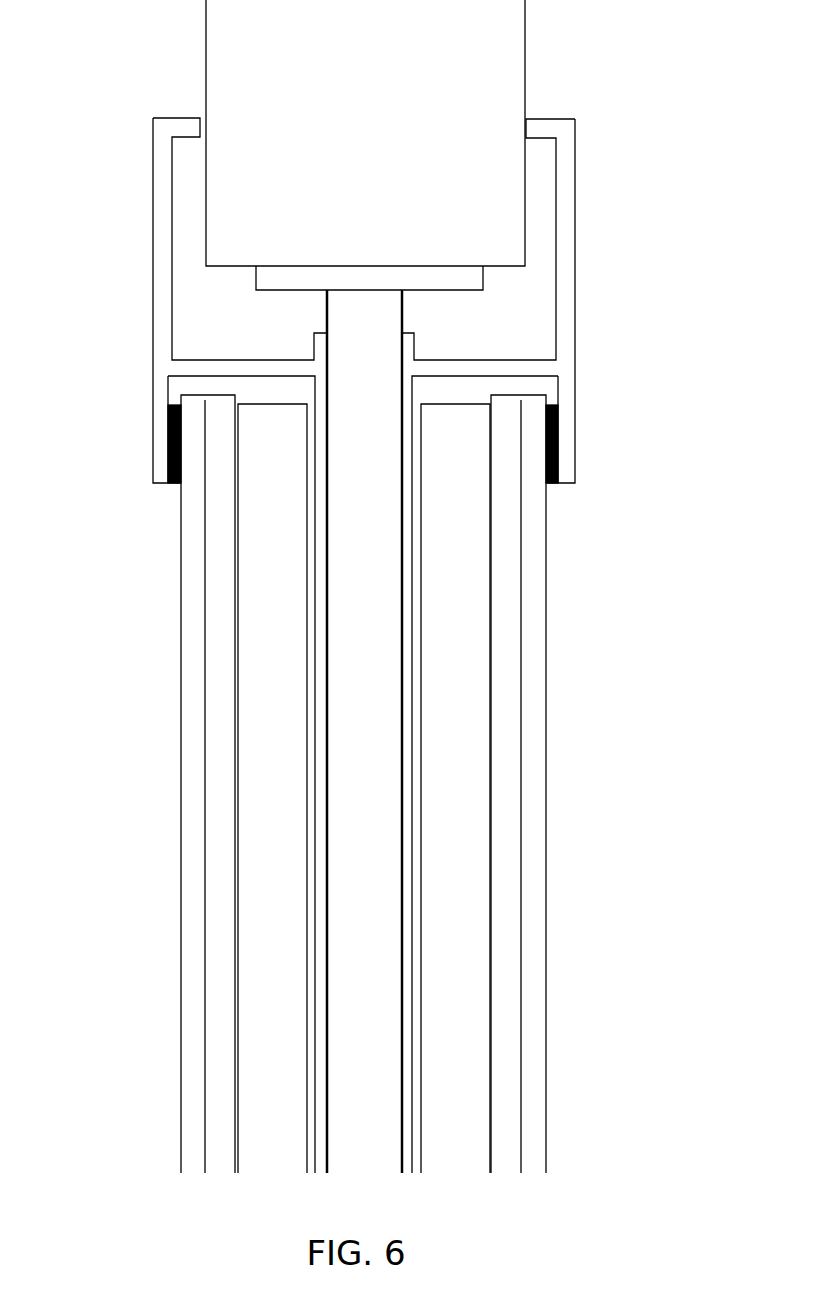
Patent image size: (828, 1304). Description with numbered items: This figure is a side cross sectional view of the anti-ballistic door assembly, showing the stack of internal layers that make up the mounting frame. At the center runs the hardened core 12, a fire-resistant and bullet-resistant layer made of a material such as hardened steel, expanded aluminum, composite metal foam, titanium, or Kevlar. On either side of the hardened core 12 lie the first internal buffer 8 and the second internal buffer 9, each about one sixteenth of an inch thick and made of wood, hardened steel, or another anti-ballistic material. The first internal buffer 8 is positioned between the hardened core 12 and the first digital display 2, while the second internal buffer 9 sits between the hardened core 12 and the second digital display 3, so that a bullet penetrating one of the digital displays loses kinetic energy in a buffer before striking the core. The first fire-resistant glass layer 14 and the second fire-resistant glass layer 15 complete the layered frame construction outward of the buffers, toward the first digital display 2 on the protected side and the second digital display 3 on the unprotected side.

The first digital display 2 is at (461, 837).
The second digital display 3 is at (278, 836).
The first internal buffer 8 is at (411, 590).
The second internal buffer 9 is at (318, 590).
The hardened core 12 is at (347, 929).
The first fire-resistant glass layer 14 is at (522, 743).
The second fire-resistant glass layer 15 is at (218, 743).